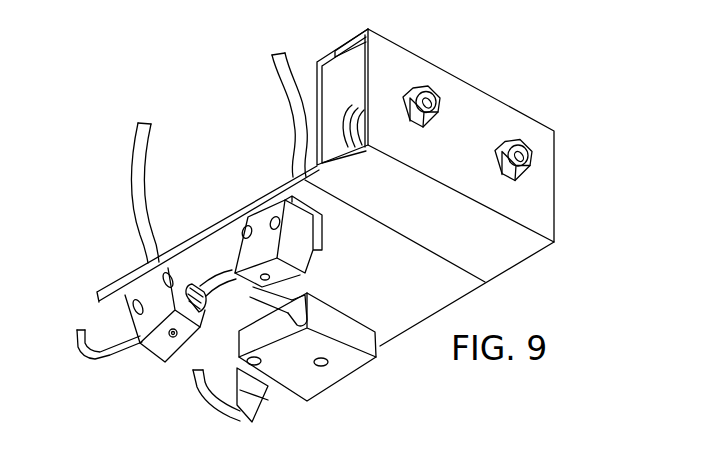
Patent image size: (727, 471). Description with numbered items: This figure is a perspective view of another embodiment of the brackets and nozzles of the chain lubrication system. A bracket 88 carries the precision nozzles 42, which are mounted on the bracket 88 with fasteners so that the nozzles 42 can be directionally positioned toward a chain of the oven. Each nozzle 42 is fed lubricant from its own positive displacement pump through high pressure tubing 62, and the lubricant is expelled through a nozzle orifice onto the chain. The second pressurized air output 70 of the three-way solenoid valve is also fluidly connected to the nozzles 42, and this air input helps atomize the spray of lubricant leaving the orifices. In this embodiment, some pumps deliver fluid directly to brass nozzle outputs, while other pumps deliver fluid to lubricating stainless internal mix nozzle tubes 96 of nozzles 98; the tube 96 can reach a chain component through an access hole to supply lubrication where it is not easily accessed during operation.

The bracket 88 is at (472, 97).
The high pressure tubing 62 is at (148, 150).
The nozzle 42 is at (185, 280).
The second pressurized air output 70 is at (78, 358).
The internal mix nozzle tube 96 is at (292, 293).
The nozzle 98 is at (326, 373).